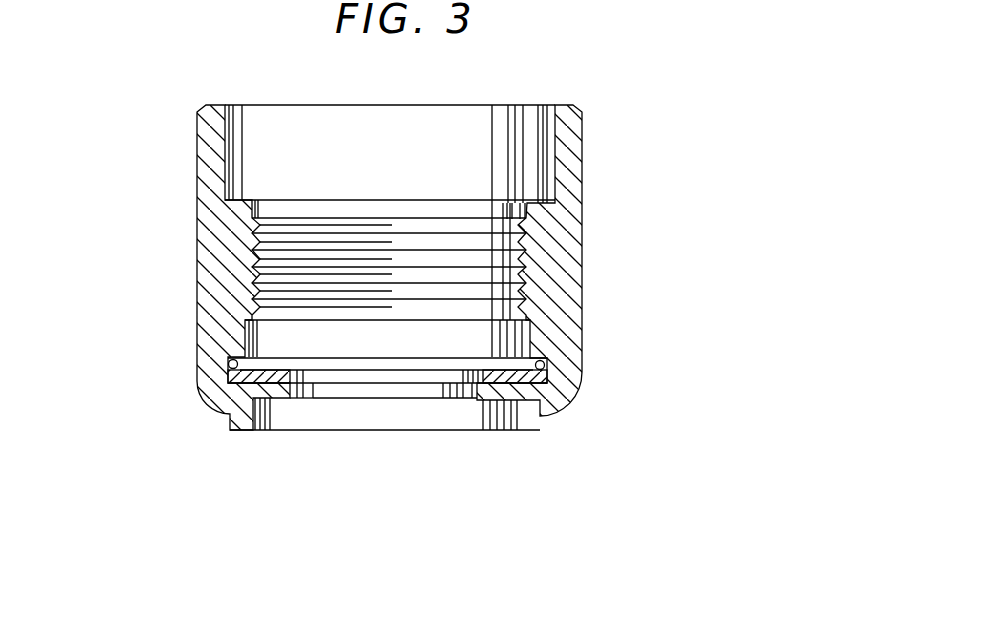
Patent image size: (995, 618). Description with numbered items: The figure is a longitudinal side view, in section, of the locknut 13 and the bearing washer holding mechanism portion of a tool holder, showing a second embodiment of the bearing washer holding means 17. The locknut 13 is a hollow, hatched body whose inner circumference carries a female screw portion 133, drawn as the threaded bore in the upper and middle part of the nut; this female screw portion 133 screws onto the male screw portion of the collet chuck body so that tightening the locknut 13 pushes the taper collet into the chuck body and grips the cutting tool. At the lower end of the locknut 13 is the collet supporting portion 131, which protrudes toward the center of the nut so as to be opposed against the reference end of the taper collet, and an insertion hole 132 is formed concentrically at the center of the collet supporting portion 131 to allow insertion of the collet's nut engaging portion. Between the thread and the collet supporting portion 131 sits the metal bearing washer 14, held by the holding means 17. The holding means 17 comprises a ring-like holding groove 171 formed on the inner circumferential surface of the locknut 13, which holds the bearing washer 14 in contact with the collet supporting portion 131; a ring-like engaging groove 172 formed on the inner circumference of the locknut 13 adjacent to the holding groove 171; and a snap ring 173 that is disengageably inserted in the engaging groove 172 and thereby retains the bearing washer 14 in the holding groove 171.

The locknut 13 is at (592, 141).
The female screw portion 133 is at (520, 247).
The holding means 17 is at (556, 346).
The holding groove 171 is at (553, 377).
The engaging groove 172 is at (228, 361).
The snap ring 173 is at (545, 362).
The bearing washer 14 is at (530, 399).
The collet supporting portion 131 is at (497, 399).
The insertion hole 132 is at (312, 399).